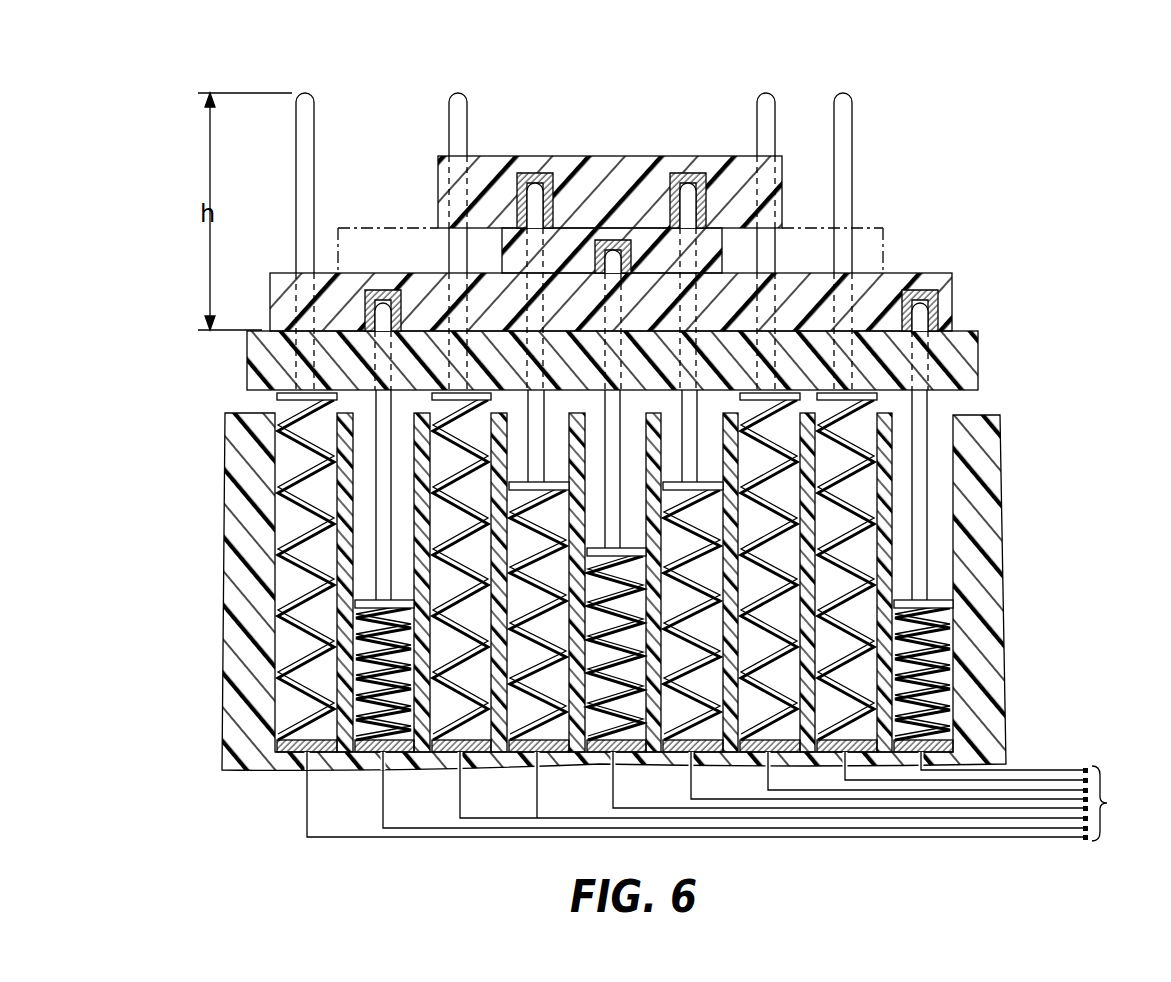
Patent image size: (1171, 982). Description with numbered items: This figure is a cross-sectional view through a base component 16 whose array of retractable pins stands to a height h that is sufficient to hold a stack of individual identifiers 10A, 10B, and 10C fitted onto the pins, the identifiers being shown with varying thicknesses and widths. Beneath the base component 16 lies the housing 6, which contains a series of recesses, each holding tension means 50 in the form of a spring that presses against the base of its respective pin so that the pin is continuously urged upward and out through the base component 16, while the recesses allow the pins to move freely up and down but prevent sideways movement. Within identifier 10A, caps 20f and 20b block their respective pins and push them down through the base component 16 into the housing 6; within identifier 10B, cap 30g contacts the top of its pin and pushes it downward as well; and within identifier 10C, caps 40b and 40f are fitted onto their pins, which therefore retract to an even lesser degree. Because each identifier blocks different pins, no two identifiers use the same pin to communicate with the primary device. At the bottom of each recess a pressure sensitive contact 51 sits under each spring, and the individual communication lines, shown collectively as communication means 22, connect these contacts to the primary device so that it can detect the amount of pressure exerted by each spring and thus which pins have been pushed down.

The base plate 6 is at (980, 365).
The identifier 10A is at (953, 308).
The identifier 10B is at (883, 250).
The identifier 10C is at (438, 183).
The base component 16 is at (302, 92).
The cap 20f is at (382, 290).
The cap 20b is at (920, 290).
The cap 30g is at (623, 240).
The cap 40b is at (538, 173).
The cap 40f is at (712, 173).
The tension means 50 is at (382, 603).
The pressure sensitive contact 51 is at (357, 754).
The communication means 22 is at (1158, 822).